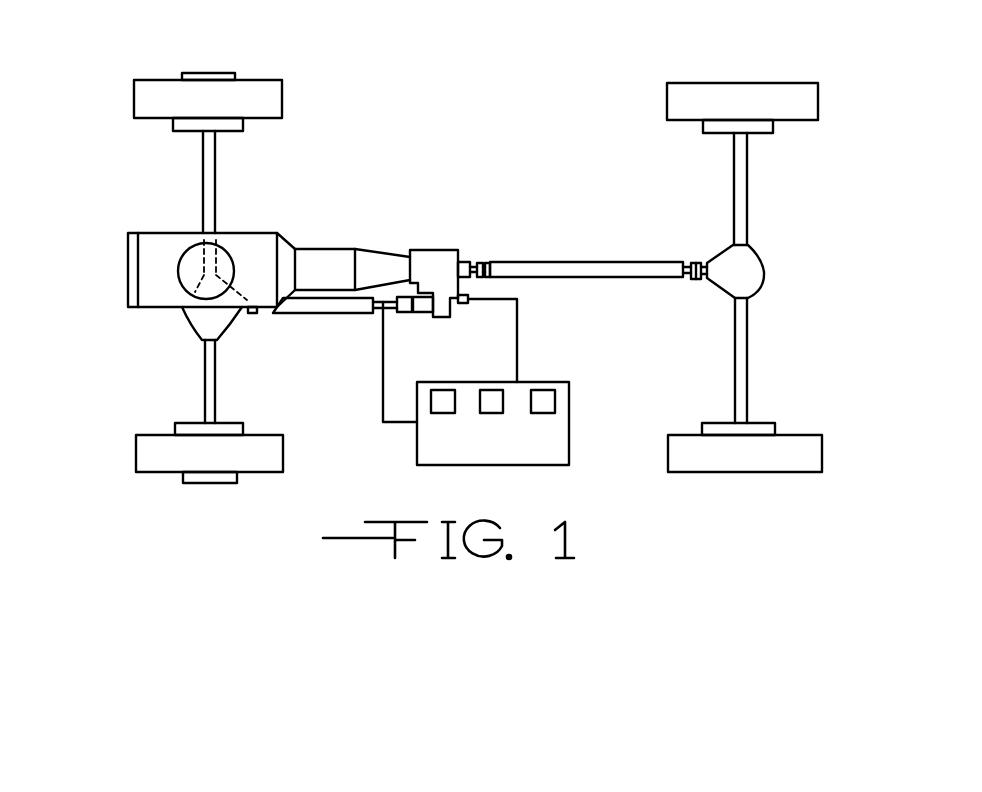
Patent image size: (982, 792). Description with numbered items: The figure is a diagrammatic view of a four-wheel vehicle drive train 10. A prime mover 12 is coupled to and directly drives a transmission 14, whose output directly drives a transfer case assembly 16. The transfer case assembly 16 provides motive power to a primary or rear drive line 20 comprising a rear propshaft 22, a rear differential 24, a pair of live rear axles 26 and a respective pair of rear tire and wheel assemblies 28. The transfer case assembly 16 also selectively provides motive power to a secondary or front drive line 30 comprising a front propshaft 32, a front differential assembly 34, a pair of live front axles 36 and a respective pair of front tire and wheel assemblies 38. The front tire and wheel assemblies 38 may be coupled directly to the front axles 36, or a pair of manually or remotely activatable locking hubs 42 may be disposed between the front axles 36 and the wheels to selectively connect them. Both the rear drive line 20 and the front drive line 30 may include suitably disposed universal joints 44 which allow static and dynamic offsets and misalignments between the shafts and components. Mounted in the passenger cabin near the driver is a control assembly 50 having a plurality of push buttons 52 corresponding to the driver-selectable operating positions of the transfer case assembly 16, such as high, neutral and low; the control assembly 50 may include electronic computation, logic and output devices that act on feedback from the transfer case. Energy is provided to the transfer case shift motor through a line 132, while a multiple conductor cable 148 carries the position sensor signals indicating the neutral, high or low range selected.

The four-wheel vehicle drive train 10 is at (497, 128).
The prime mover 12 is at (248, 250).
The transmission 14 is at (320, 265).
The transfer case assembly 16 is at (432, 250).
The primary or rear drive line 20 is at (645, 197).
The primary or rear propshaft 22 is at (600, 278).
The primary or rear differential 24 is at (742, 272).
The primary or rear axles 26 is at (750, 182).
The primary or rear tire and wheel assemblies 28 is at (728, 78).
The secondary or front drive line 30 is at (260, 327).
The secondary or front propshaft 32 is at (318, 313).
The secondary or front differential assembly 34 is at (195, 327).
The secondary or front axles 36 is at (200, 173).
The secondary or front tire and wheel assemblies 38 is at (252, 72).
The locking hubs 42 is at (197, 73).
The universal joints 44 is at (480, 258).
The control assembly 50 is at (572, 423).
The push buttons 52 is at (543, 402).
The line 132 is at (517, 317).
The multiple conductor cable 148 is at (372, 398).